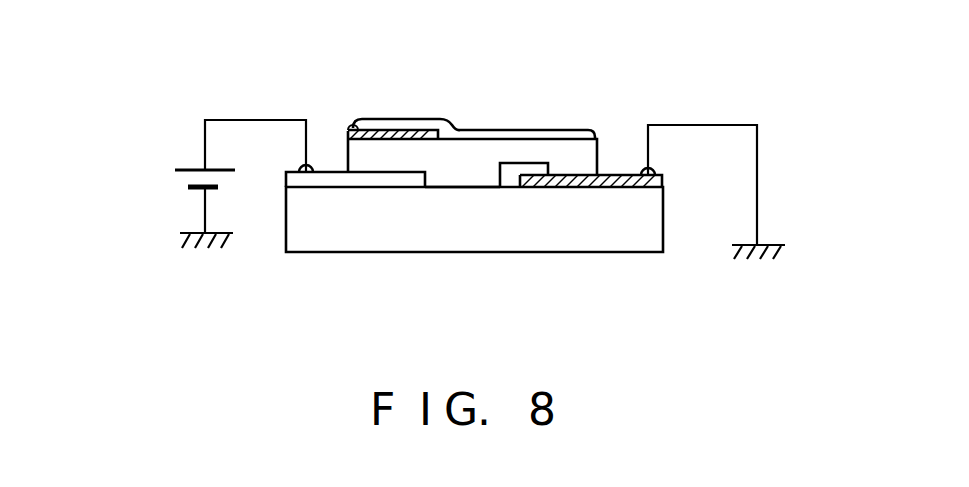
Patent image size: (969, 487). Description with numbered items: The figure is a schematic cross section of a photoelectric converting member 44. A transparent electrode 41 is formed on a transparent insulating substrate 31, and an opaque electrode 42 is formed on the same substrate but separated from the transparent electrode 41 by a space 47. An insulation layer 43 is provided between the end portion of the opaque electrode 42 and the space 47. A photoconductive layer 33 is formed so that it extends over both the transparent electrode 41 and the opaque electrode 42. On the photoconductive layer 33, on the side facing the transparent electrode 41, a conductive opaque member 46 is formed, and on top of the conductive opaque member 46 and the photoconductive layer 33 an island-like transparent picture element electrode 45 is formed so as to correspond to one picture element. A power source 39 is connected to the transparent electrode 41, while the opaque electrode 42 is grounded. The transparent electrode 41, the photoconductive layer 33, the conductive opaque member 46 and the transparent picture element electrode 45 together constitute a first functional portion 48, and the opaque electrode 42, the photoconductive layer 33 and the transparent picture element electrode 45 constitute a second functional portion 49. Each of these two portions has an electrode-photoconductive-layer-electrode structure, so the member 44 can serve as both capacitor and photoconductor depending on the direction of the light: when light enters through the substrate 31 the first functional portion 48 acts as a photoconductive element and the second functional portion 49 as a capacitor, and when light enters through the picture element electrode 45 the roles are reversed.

The transparent insulating substrate 31 is at (398, 234).
The photoconductive layer 33 is at (585, 155).
The power source 39 is at (181, 180).
The transparent electrode 41 is at (358, 182).
The opaque electrode 42 is at (590, 182).
The insulation layer 43 is at (508, 188).
The photoelectric converting member 44 is at (626, 58).
The transparent picture element electrode 45 is at (576, 129).
The conductive opaque member 46 is at (352, 126).
The space 47 is at (464, 174).
The first functional portion 48 is at (453, 88).
The second functional portion 49 is at (592, 88).